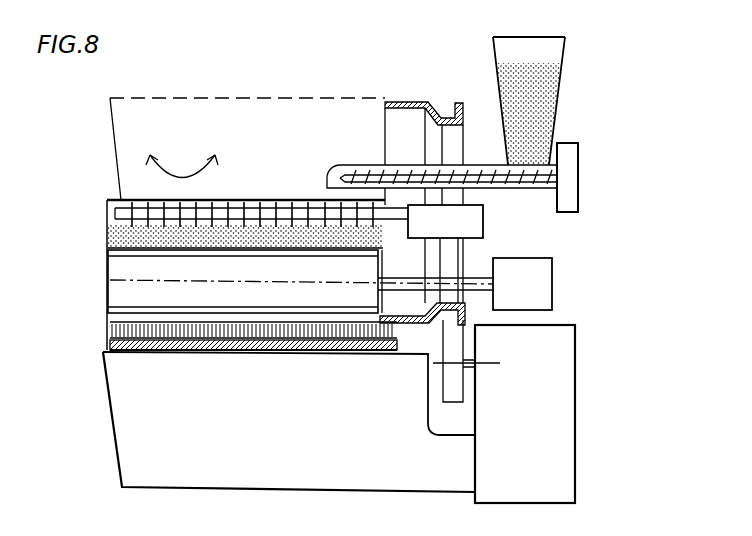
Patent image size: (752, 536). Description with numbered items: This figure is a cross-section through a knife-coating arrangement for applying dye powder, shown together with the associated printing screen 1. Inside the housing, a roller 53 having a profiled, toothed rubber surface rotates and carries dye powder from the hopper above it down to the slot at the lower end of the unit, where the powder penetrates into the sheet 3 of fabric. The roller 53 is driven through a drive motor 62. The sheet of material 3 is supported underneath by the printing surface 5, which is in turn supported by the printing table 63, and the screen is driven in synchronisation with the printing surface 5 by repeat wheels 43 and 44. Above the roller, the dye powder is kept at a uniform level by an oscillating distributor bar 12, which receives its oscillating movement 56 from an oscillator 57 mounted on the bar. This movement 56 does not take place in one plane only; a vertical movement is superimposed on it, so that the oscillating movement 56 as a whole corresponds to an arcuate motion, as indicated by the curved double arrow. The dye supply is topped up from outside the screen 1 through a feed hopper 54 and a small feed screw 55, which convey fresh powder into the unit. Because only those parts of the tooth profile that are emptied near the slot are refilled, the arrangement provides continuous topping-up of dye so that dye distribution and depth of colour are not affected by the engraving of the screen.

The screen 1 is at (272, 97).
The sheet of fabric 3 is at (277, 353).
The printing surface 5 is at (228, 353).
The oscillating distributor bar 12 is at (250, 203).
The repeat wheel 43 is at (457, 392).
The repeat wheel 44 is at (449, 102).
The roller 53 is at (172, 285).
The feed hopper 54 is at (557, 103).
The feed screw 55 is at (382, 165).
The oscillating movement 56 is at (177, 178).
The oscillator 57 is at (483, 220).
The drive motor 62 is at (529, 293).
The printing table 63 is at (309, 431).